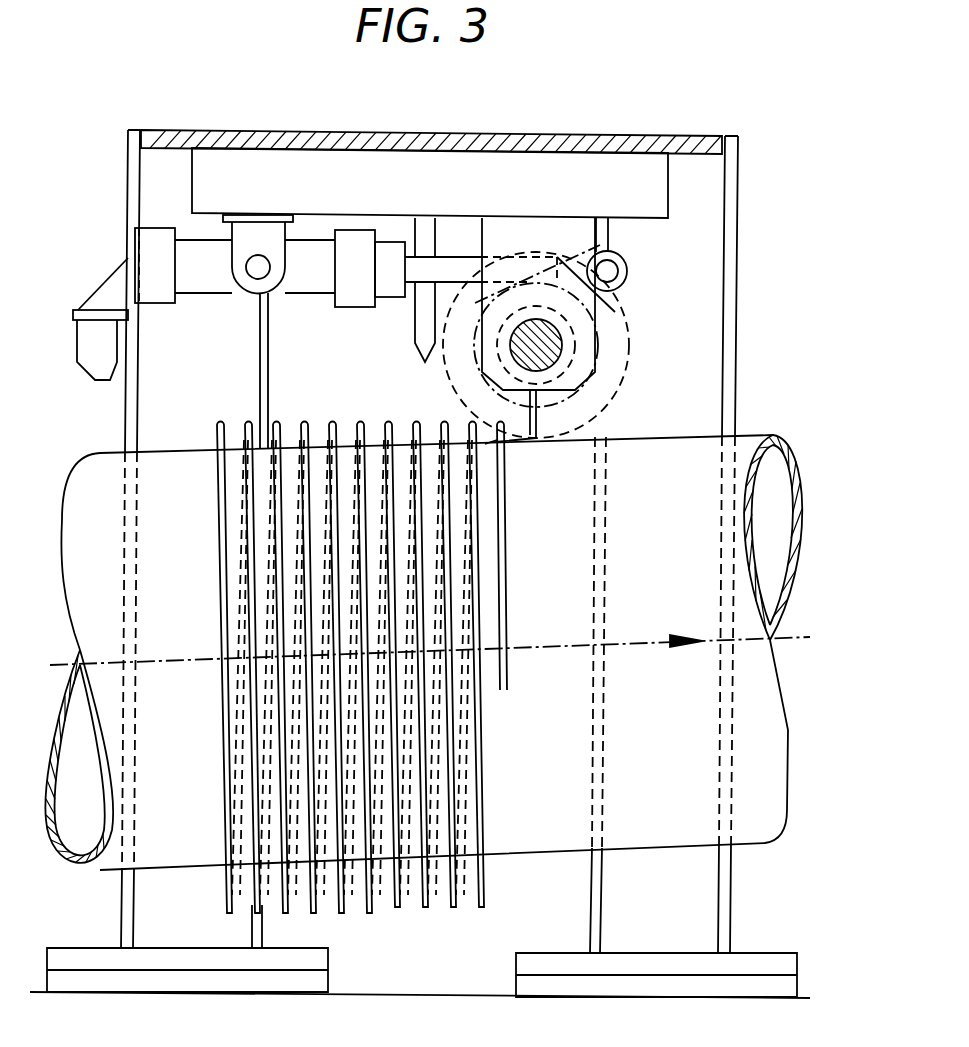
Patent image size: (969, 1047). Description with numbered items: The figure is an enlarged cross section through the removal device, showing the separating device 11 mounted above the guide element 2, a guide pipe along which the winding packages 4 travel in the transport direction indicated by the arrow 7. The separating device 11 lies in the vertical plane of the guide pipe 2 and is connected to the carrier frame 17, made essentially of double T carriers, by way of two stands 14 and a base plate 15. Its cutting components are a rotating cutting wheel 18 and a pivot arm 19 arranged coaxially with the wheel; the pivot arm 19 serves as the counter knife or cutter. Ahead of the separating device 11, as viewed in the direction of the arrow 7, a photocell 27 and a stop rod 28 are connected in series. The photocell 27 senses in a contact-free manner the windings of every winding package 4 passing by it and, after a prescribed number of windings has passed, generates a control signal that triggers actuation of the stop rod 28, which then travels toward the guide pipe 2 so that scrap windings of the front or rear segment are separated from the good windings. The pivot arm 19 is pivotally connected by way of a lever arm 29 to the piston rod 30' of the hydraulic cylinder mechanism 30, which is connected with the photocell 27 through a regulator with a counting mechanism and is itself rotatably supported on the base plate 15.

The guide element 2 is at (707, 433).
The winding packages 4 is at (400, 907).
The arrow 7 is at (640, 643).
The separating device 11 is at (690, 338).
The stands 14 is at (580, 232).
The base plate 15 is at (643, 172).
The carrier frame 17 is at (710, 190).
The rotating cutting wheel 18 is at (613, 358).
The pivot arm 19 is at (565, 415).
The photocell 27 is at (92, 355).
The stop rod 28 is at (422, 243).
The lever arm 29 is at (597, 307).
The hydraulic cylinder mechanism 30 is at (270, 331).
The piston rod 30' is at (458, 309).